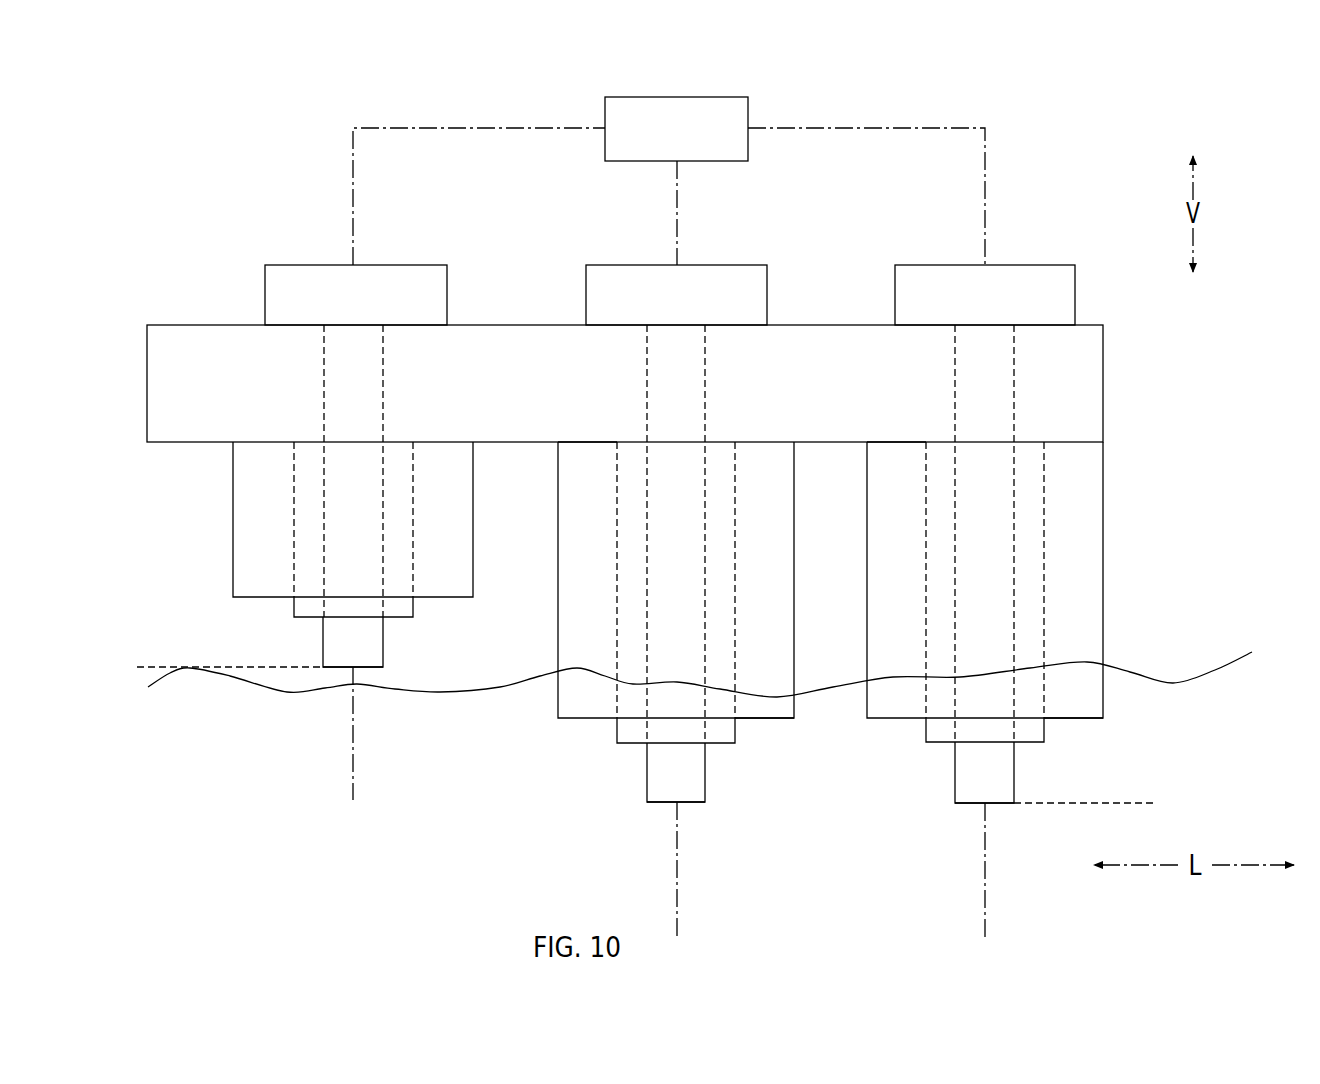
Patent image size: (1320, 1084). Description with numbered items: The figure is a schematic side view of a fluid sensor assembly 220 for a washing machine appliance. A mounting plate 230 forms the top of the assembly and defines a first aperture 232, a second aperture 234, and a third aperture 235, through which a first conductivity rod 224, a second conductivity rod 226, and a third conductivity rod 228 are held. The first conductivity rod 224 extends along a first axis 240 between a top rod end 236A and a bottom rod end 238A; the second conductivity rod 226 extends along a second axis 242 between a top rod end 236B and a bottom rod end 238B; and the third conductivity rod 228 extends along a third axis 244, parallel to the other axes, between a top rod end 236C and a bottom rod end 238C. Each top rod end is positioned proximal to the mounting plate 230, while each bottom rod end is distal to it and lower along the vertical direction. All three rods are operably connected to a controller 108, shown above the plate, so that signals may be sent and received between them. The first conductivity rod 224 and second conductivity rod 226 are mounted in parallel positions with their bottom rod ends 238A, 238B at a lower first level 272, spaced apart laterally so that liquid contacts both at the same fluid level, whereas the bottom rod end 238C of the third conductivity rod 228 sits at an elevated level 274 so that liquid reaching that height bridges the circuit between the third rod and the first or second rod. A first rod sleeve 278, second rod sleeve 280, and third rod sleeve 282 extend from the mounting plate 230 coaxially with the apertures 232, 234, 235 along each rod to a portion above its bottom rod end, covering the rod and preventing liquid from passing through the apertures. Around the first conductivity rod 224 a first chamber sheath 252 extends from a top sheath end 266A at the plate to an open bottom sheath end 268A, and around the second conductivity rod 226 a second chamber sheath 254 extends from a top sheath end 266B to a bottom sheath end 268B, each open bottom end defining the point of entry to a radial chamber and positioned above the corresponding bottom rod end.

The controller 108 is at (686, 96).
The actuator assembly 220 is at (194, 199).
The mounting plate 230 is at (1103, 370).
The top rod end 236C is at (344, 320).
The top rod end 236B is at (674, 320).
The top rod end 236A is at (979, 320).
The third aperture 235 is at (388, 383).
The second aperture 234 is at (710, 378).
The first aperture 232 is at (1021, 365).
The top sheath end 266B is at (591, 449).
The first shoulder 266A is at (902, 449).
The third rod sleeve 282 is at (294, 533).
The second rod sleeve 280 is at (617, 624).
The first rod sleeve 278 is at (926, 646).
The third conductivity rod 228 is at (383, 523).
The second conductivity rod 226 is at (705, 608).
The first conductivity rod 224 is at (1014, 620).
The second chamber sheath 254 is at (794, 532).
The first chamber sheath 252 is at (1103, 540).
The bottom sheath end 268B is at (762, 724).
The first bottom face 268A is at (1089, 724).
The bottom rod end 238C is at (368, 671).
The bottom rod end 238B is at (656, 808).
The bottom rod end 238A is at (970, 809).
The elevated level 274 is at (213, 665).
The first level 272 is at (1103, 802).
The third axis 244 is at (355, 770).
The second axis 242 is at (680, 862).
The first axis 240 is at (987, 905).